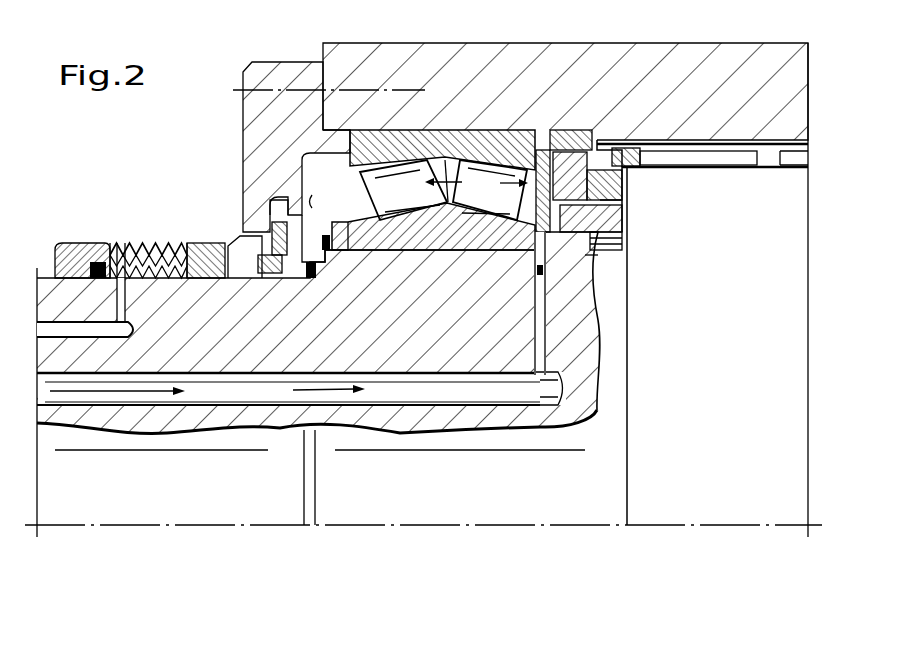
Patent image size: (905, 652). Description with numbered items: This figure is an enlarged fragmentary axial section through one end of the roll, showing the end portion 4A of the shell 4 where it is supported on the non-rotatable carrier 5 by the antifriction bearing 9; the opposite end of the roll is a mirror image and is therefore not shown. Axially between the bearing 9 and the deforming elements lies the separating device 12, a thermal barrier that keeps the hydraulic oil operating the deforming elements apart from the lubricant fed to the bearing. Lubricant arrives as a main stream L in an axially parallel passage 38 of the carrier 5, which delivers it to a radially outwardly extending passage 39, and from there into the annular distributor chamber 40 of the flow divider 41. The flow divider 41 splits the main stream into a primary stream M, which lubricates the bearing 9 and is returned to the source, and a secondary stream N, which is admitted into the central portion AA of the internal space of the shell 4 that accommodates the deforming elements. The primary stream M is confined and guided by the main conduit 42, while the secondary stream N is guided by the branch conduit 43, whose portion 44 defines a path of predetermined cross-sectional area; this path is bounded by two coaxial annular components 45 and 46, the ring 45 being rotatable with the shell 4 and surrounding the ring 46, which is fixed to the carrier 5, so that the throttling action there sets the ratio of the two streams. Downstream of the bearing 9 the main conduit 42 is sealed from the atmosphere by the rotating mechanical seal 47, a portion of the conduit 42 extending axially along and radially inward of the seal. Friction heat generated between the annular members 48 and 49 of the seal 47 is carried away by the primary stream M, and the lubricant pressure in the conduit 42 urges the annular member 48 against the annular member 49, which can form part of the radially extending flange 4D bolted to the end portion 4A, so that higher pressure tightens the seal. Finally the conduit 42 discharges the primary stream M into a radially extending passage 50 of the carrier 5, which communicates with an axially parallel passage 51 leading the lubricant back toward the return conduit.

The shell 4 is at (682, 66).
The end portion of the shell 4A is at (343, 57).
The radially extending flange 4D is at (252, 112).
The carrier 5 is at (470, 512).
The antifriction bearing 9 is at (433, 125).
The separating device 12 is at (572, 133).
The axially parallel bore or passage 38 is at (241, 397).
The radially outwardly extending passage or bore 39 is at (540, 333).
The annular distributor chamber 40 is at (547, 195).
The flow divider 41 is at (460, 64).
The main conduit 42 is at (316, 163).
The branch conduit 43 is at (627, 213).
The portion of the branch conduit 44 is at (613, 233).
The annular component 45 is at (615, 163).
The annular component 46 is at (600, 247).
The rotating mechanical seal 47 is at (224, 224).
The annular member 48 is at (208, 242).
The annular member 49 is at (243, 230).
The radially extending bore or passage 50 is at (97, 243).
The axially parallel passage 51 is at (46, 322).
The primary stream M is at (447, 167).
The secondary stream N is at (585, 240).
The main stream L is at (543, 297).
The central portion of the internal space AA is at (793, 250).